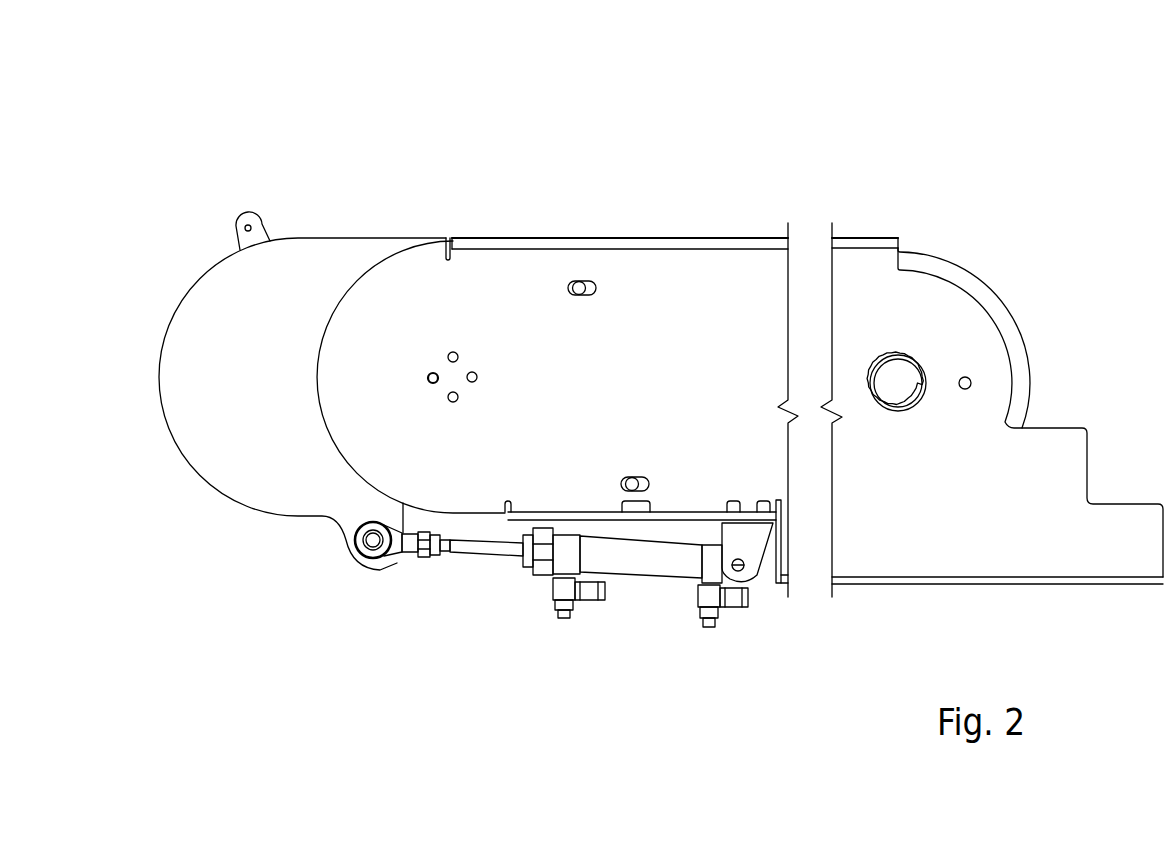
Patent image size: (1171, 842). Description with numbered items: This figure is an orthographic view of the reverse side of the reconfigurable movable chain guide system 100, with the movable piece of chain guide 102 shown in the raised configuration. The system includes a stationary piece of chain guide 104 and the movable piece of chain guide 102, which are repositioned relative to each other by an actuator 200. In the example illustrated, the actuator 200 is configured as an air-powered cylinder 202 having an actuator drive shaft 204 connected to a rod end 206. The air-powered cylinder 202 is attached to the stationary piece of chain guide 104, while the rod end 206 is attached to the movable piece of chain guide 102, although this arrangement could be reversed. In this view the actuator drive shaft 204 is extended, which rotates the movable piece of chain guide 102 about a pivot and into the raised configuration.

The reconfigurable movable chain guide system 100 is at (474, 84).
The movable piece of chain guide 102 is at (337, 237).
The stationary piece of chain guide 104 is at (528, 238).
The actuator 200 is at (582, 654).
The air-powered cylinder 202 is at (622, 575).
The actuator drive shaft 204 is at (480, 553).
The rod end 206 is at (365, 562).